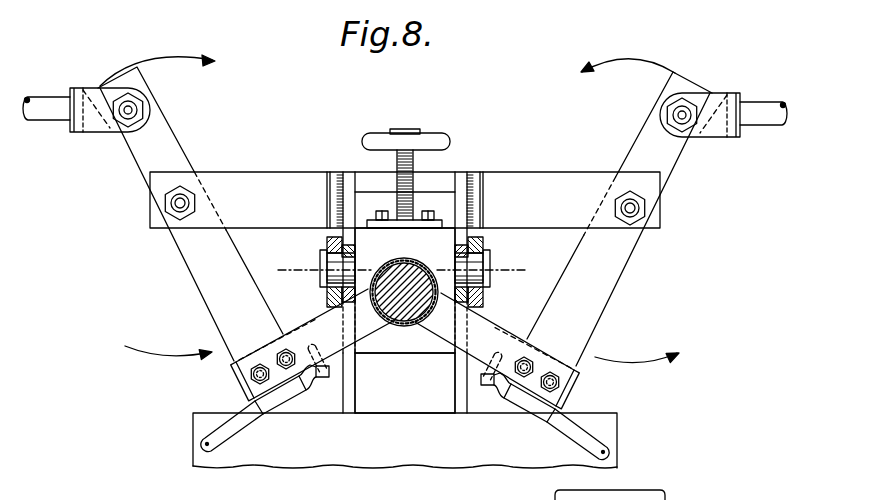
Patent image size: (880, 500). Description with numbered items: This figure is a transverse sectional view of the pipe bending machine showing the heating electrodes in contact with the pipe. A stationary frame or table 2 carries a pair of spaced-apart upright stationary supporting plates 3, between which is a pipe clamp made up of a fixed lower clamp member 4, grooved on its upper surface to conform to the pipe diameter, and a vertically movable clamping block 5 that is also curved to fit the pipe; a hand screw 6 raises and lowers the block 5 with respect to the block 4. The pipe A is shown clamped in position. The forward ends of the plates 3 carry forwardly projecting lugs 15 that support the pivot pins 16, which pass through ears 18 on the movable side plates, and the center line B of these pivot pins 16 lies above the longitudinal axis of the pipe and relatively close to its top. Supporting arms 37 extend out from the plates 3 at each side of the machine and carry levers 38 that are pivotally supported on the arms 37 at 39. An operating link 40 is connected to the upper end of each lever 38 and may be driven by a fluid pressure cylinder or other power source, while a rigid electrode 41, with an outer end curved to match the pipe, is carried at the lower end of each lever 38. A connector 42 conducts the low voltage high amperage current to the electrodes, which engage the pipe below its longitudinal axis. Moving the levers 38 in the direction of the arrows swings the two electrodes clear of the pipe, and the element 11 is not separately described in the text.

The stationary frame or table 2 is at (428, 456).
The stationary supporting plates 3 is at (347, 180).
The fixed lower clamp member 4 is at (393, 348).
The vertically movable clamping block 5 is at (405, 290).
The hand screw 6 is at (405, 143).
The shaft 11 is at (407, 308).
The forwardly projecting lugs 15 is at (327, 297).
The pivot pins 16 is at (330, 268).
The ears 18 is at (327, 242).
The supporting arms 37 is at (252, 178).
The levers 38 is at (132, 157).
The pivot 39 is at (176, 204).
The operating link 40 is at (55, 118).
The rigid electrode 41 is at (233, 378).
The connector 42 is at (285, 408).
The pipe A is at (412, 267).
The center line of the pivot pins B is at (400, 273).